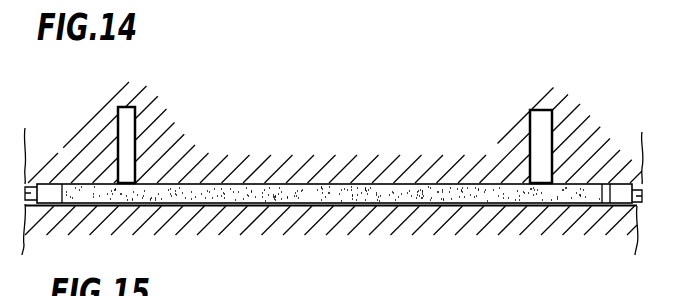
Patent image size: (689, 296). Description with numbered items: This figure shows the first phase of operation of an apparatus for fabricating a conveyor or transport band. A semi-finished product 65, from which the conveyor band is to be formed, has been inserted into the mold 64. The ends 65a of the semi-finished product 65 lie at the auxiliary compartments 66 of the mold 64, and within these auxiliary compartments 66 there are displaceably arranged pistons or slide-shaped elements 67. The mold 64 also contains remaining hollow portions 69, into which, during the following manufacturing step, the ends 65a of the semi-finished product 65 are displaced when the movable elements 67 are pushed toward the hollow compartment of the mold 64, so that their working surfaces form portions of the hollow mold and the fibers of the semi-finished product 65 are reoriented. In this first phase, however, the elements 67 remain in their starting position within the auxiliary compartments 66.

The mold 64 is at (297, 167).
The semi-finished product 65 is at (302, 197).
The ends of the semi-finished product 65a is at (553, 208).
The auxiliary compartments 66 is at (598, 207).
The pistons or slide-shaped elements 67 is at (50, 195).
The remaining hollow portions of the mold 69 is at (127, 128).